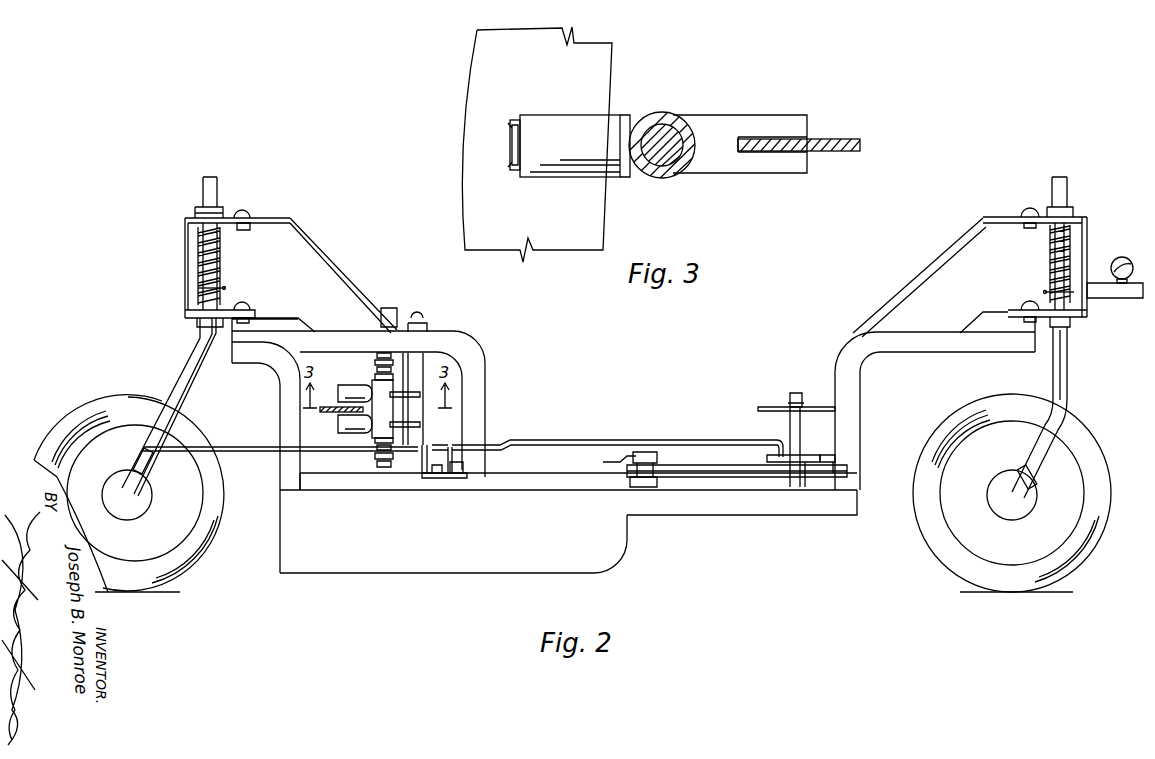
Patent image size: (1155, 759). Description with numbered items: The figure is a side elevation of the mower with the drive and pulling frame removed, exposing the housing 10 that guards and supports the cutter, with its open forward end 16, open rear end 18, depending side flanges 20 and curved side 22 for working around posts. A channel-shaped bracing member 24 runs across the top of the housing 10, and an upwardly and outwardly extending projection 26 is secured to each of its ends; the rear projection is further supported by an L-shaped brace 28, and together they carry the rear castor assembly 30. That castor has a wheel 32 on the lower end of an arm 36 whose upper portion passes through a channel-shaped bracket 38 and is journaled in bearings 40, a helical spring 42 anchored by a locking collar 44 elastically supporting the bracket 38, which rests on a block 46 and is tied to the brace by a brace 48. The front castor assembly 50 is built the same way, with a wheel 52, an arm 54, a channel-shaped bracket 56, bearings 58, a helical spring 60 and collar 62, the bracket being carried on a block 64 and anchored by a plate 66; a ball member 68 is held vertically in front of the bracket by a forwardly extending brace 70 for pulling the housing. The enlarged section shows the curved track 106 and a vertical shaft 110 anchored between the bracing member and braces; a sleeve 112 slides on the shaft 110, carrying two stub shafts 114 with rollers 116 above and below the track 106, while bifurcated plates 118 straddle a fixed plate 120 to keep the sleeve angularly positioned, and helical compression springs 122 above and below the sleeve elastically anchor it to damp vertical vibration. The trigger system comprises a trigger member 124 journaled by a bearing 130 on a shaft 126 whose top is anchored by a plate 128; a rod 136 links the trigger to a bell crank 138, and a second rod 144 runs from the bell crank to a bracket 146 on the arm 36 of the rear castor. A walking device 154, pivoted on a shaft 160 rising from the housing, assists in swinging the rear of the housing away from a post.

In FIG. 2, the housing 10 is at (663, 507).
In FIG. 2, the forward end 16 is at (858, 505).
In FIG. 2, the rear end 18 is at (280, 513).
In FIG. 2, the flanges 20 is at (408, 566).
In FIG. 2, the curved side 22 is at (512, 537).
In FIG. 2, the bracing member 24 is at (578, 483).
In FIG. 2, the projection 26 is at (281, 404).
In FIG. 2, the L-shaped brace 28 is at (486, 373).
In FIG. 2, the castor assembly 30 is at (73, 400).
In FIG. 2, the wheel 32 is at (198, 537).
In FIG. 2, the arm 36 is at (190, 381).
In FIG. 2, the channel-shaped bracket 38 is at (185, 266).
In FIG. 2, the bearings 40 is at (233, 216).
In FIG. 2, the helical spring 42 is at (222, 268).
In FIG. 2, the locking collar 44 is at (200, 289).
In FIG. 2, the block 46 is at (270, 326).
In FIG. 2, the brace 48 is at (325, 264).
In FIG. 2, the front castor assembly 50 is at (960, 402).
In FIG. 2, the wheel 52 is at (935, 445).
In FIG. 2, the arm 54 is at (1058, 383).
In FIG. 2, the channel-shaped bracket 56 is at (1088, 230).
In FIG. 2, the bearings 58 is at (1040, 214).
In FIG. 2, the helical spring 60 is at (1050, 248).
In FIG. 2, the collar 62 is at (1050, 288).
In FIG. 2, the block 64 is at (982, 325).
In FIG. 2, the plate 66 is at (950, 248).
In FIG. 2, the ball member 68 is at (1128, 257).
In FIG. 2, the brace 70 is at (1100, 290).
In FIG. 2, the curved track 106 is at (330, 412).
In FIG. 3, the curved track 106 is at (477, 66).
In FIG. 2, the shaft 110 is at (383, 470).
In FIG. 3, the shaft 110 is at (670, 170).
In FIG. 2, the sleeve 112 is at (398, 420).
In FIG. 3, the sleeve 112 is at (675, 115).
In FIG. 3, the stub shafts 114 is at (507, 150).
In FIG. 2, the rollers 116 is at (362, 385).
In FIG. 3, the rollers 116 is at (570, 125).
In FIG. 2, the bifurcated plates 118 is at (409, 380).
In FIG. 3, the bifurcated plates 118 is at (750, 120).
In FIG. 2, the plate 120 is at (419, 438).
In FIG. 3, the plate 120 is at (830, 140).
In FIG. 2, the helical compression springs 122 is at (380, 348).
In FIG. 2, the trigger member 124 is at (842, 465).
In FIG. 2, the shaft 126 is at (790, 396).
In FIG. 2, the plate 128 is at (818, 405).
In FIG. 2, the bearing 130 is at (803, 451).
In FIG. 2, the rod 136 is at (736, 440).
In FIG. 2, the bell crank 138 is at (430, 478).
In FIG. 2, the rod 144 is at (240, 452).
In FIG. 2, the bracket 146 is at (141, 457).
In FIG. 2, the walking device 154 is at (710, 488).
In FIG. 2, the shaft 160 is at (665, 422).